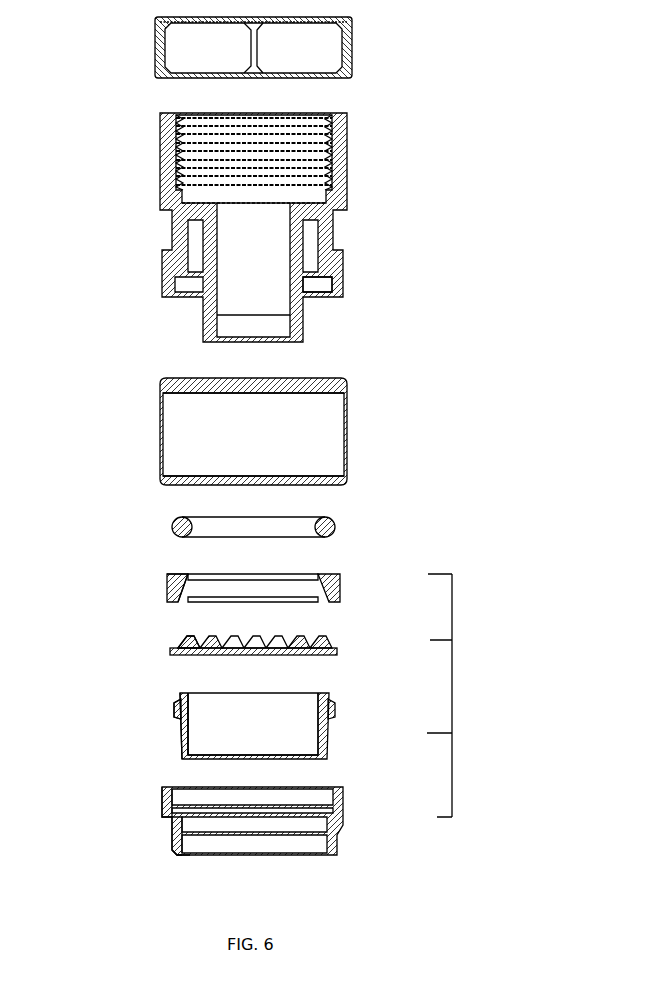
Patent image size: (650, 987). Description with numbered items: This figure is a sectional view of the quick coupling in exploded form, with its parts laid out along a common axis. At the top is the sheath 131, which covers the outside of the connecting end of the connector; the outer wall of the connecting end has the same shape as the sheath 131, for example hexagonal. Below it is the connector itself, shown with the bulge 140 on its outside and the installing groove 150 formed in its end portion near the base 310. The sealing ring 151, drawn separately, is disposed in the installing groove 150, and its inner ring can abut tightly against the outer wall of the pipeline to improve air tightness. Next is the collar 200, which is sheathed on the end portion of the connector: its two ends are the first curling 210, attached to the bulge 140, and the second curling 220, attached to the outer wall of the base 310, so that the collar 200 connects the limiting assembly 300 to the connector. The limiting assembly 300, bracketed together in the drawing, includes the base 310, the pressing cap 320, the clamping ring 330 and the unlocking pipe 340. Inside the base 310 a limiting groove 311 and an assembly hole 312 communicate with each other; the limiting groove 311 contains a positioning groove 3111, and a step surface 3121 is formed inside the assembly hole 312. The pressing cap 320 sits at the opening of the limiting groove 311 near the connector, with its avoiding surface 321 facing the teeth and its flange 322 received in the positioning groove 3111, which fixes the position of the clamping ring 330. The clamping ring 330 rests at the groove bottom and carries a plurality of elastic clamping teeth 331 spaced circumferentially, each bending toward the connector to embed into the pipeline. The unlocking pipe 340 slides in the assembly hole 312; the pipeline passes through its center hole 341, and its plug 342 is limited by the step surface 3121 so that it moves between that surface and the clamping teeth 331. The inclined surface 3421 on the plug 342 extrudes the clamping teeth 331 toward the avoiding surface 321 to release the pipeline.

The sheath 131 is at (353, 43).
The bulge 140 is at (162, 258).
The installing groove 150 is at (328, 282).
The sealing ring 151 is at (335, 526).
The collar 200 is at (347, 435).
The first curling 210 is at (165, 382).
The second curling 220 is at (162, 480).
The limiting assembly 300 is at (452, 693).
The base 310 is at (345, 825).
The limiting groove 311 is at (175, 798).
The positioning groove 3111 is at (190, 848).
The step surface 3121 is at (170, 837).
The assembly hole 312 is at (173, 842).
The pressing cap 320 is at (343, 578).
The avoiding surface 321 is at (167, 578).
The flange 322 is at (167, 600).
The clamping ring 330 is at (337, 652).
The clamping teeth 331 is at (180, 647).
The unlocking pipe 340 is at (330, 745).
The center hole 341 is at (215, 742).
The plug 342 is at (178, 713).
The inclined surface 3421 is at (182, 703).